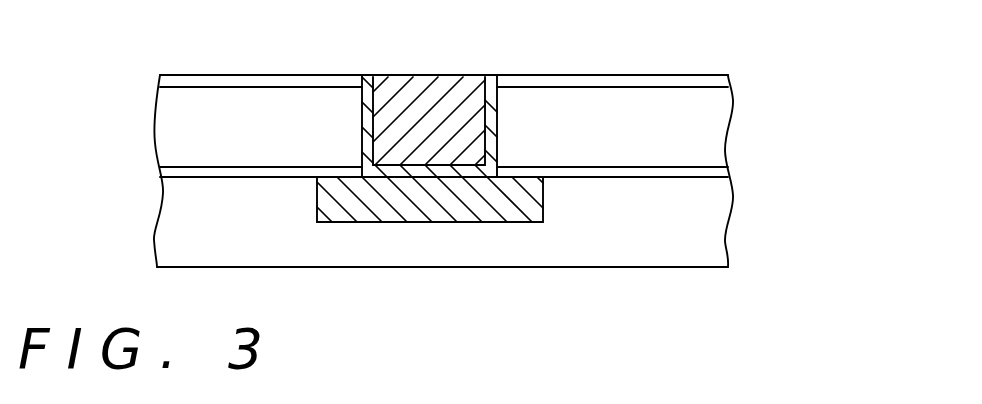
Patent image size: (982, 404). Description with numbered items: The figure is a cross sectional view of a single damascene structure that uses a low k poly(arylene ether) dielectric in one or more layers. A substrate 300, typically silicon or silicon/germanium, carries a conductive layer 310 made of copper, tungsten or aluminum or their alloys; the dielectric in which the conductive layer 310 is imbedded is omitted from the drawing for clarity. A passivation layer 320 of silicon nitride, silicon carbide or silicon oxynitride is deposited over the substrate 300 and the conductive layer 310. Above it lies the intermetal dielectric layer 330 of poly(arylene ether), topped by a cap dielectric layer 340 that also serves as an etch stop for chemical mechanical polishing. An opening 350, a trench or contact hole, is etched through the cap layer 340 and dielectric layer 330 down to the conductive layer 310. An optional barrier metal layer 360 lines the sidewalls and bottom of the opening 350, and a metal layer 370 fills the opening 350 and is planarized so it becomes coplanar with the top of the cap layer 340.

The substrate 300 is at (710, 215).
The conductive layer 310 is at (412, 212).
The passivation layer 320 is at (172, 175).
The intermetal dielectric layer 330 is at (172, 146).
The cap dielectric layer 340 is at (172, 83).
The opening 350 is at (362, 115).
The barrier metal layer 360 is at (370, 93).
The metal layer 370 is at (432, 98).